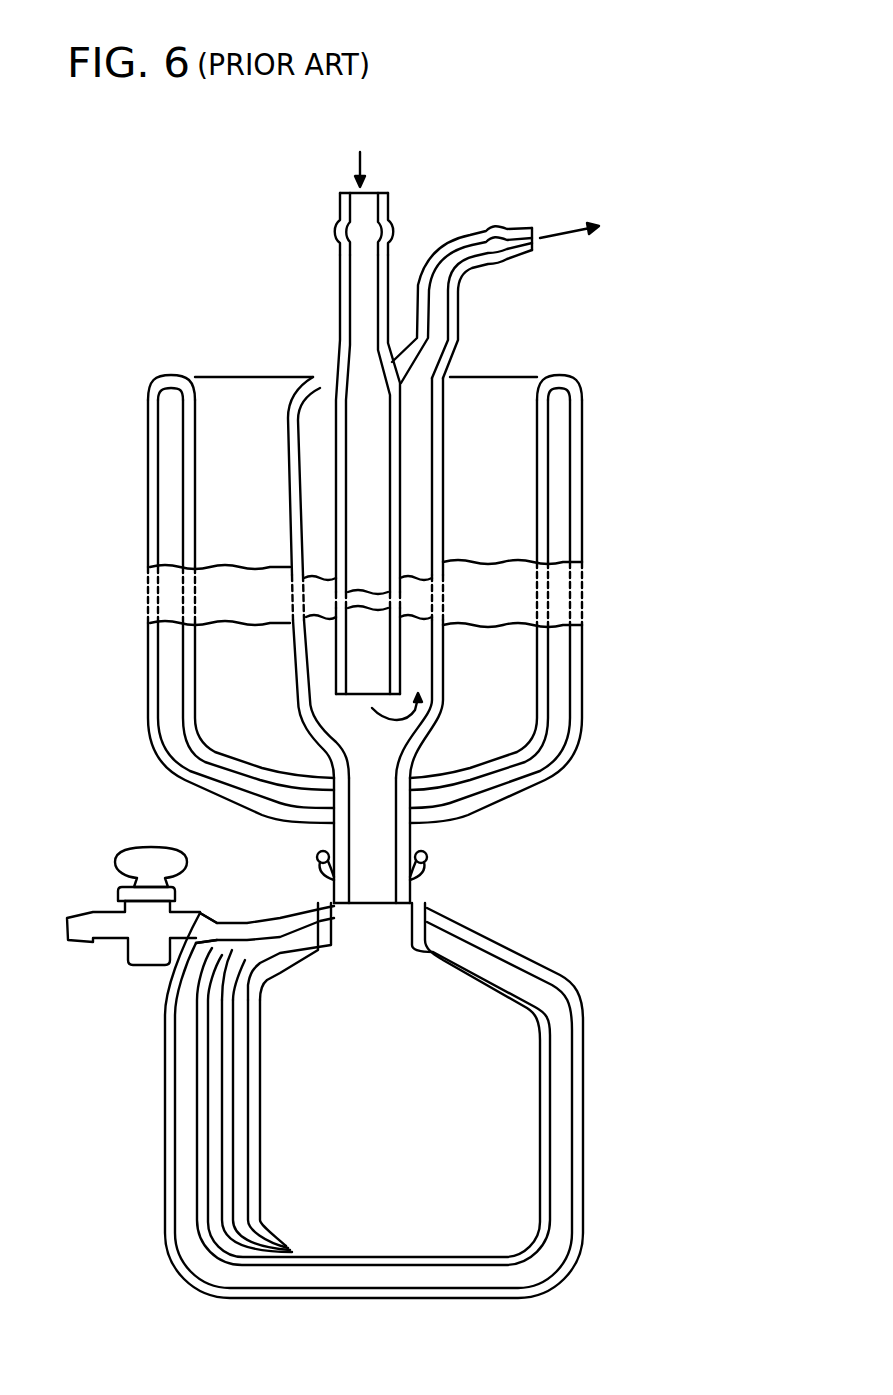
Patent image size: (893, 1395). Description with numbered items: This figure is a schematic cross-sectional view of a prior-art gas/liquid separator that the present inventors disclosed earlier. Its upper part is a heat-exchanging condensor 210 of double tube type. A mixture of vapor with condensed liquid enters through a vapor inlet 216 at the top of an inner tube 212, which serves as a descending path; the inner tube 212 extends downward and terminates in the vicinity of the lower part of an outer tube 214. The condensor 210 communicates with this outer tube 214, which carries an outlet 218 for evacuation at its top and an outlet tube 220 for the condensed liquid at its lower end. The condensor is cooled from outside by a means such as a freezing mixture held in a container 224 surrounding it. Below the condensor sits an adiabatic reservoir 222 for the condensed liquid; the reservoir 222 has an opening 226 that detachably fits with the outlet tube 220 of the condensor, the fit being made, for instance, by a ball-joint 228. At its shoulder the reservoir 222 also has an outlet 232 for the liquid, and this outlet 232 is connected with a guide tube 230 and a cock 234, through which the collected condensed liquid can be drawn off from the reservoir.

The heat-exchanging condensor 210 is at (332, 370).
The inner tube 212 is at (400, 424).
The outer tube 214 is at (445, 468).
The vapor inlet 216 is at (343, 208).
The outlet for evacuation 218 is at (513, 228).
The outlet tube 220 is at (373, 855).
The adiabatic reservoir 222 is at (580, 997).
The container 224 is at (550, 540).
The opening 226 is at (318, 857).
The ball-joint 228 is at (430, 878).
The guide tube 230 is at (240, 1173).
The outlet 232 is at (200, 986).
The cock 234 is at (117, 906).